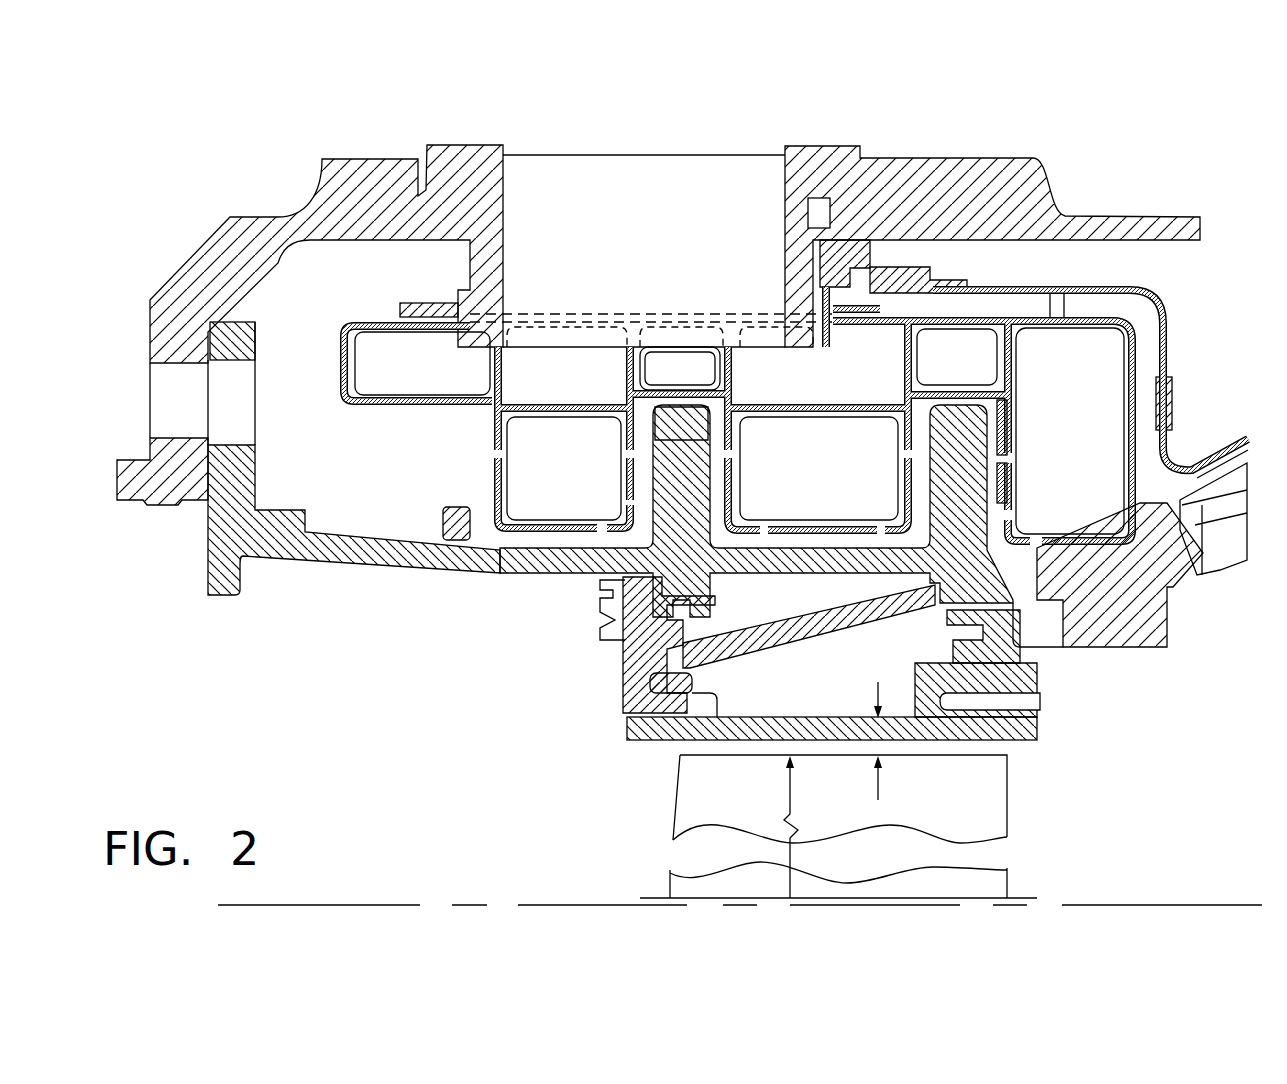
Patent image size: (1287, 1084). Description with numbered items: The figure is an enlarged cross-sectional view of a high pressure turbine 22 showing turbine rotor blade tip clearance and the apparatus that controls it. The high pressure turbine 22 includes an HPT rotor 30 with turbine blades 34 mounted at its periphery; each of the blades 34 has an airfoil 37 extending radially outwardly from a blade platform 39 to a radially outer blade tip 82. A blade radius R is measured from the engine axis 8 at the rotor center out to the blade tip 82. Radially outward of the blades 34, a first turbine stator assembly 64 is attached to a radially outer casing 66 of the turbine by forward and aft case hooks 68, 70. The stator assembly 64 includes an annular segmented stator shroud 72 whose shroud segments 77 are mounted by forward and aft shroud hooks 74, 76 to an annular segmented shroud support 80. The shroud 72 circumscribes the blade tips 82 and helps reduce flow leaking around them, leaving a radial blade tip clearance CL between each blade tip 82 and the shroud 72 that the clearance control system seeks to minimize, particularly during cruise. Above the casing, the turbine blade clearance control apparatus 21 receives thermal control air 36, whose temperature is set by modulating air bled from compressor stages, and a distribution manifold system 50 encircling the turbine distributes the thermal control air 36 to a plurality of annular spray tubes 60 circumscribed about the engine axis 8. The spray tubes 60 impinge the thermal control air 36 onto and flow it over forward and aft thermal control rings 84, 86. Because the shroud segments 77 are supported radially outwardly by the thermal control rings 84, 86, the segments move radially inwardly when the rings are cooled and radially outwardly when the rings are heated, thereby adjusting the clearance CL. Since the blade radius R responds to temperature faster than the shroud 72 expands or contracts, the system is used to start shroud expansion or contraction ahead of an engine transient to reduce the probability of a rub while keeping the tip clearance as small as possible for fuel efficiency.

The turbine blade clearance control apparatus 21 is at (921, 138).
The high pressure turbine 22 is at (1082, 746).
The HPT rotor 30 is at (658, 866).
The turbine blades 34 is at (1015, 885).
The thermal control air 36 is at (640, 232).
The airfoils 37 is at (740, 797).
The blade platforms 39 is at (1023, 888).
The distribution manifold system 50 is at (675, 292).
The annular spray tubes 60 is at (586, 406).
The first turbine stator assembly 64 is at (596, 610).
The radially outer casing 66 is at (378, 568).
The forward case hook 68 is at (622, 654).
The aft case hook 70 is at (930, 594).
The annular segmented stator shroud 72 is at (645, 752).
The forward shroud hook 74 is at (698, 687).
The aft shroud hook 76 is at (988, 677).
The shroud segments 77 is at (764, 716).
The annular segmented shroud support 80 is at (820, 646).
The blade tips 82 is at (947, 757).
The forward thermal control ring 84 is at (680, 408).
The aft thermal control ring 86 is at (1003, 432).
The engine axis 8 is at (1185, 905).
The blade radius R is at (794, 795).
The radial blade tip clearance CL is at (879, 795).